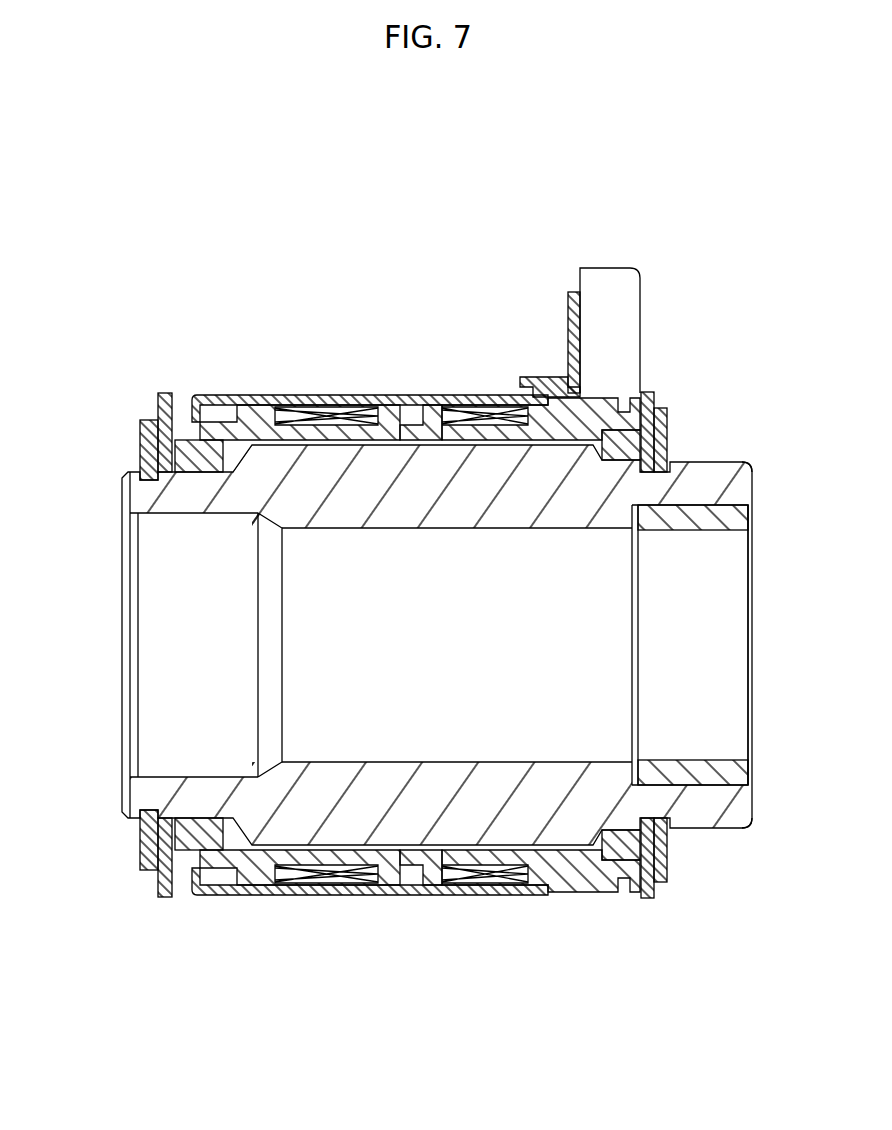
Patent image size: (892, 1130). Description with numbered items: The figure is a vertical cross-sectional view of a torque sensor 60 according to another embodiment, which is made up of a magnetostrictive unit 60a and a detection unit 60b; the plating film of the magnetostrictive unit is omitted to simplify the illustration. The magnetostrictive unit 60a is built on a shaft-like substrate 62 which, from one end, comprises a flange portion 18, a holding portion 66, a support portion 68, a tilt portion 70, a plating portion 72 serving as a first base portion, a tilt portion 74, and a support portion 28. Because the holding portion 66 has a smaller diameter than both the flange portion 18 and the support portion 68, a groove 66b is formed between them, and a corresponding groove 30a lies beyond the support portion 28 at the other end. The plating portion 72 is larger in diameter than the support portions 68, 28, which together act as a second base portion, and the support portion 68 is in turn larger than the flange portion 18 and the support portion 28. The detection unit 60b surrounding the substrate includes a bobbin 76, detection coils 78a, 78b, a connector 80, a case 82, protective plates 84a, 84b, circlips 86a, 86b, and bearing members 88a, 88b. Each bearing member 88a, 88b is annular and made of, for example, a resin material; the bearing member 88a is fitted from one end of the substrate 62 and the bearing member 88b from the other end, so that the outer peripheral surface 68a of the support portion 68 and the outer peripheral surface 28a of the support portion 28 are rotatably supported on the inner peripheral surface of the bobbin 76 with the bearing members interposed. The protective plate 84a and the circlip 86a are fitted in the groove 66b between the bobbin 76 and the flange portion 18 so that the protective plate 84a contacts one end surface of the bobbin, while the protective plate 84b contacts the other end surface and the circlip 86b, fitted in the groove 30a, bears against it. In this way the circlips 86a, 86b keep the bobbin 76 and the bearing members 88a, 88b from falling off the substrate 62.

The flange portion 18 is at (698, 470).
The support portion 28 is at (215, 795).
The outer peripheral surface 28a is at (203, 835).
The groove 30a is at (148, 835).
The torque sensor 60 is at (208, 268).
The magnetostrictive unit 60a is at (734, 440).
The detection unit 60b is at (160, 358).
The substrate 62 is at (756, 470).
The holding portion 66 is at (660, 805).
The groove 66b is at (672, 850).
The support portion 68 is at (620, 805).
The outer peripheral surface 68a is at (605, 880).
The tilt portion 70 is at (597, 832).
The plating portion 72 is at (410, 785).
The tilt portion 74 is at (300, 795).
The bobbin 76 is at (262, 403).
The detection coil 78a is at (498, 412).
The detection coil 78b is at (322, 412).
The connector 80 is at (622, 290).
The case 82 is at (410, 412).
The protective plate 84a is at (652, 396).
The protective plate 84b is at (165, 396).
The circlip 86a is at (663, 413).
The circlip 86b is at (150, 422).
The bearing member 88a is at (625, 440).
The bearing member 88b is at (205, 450).